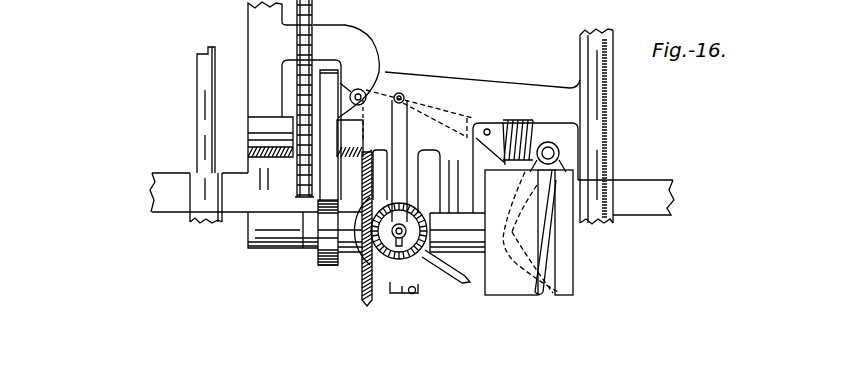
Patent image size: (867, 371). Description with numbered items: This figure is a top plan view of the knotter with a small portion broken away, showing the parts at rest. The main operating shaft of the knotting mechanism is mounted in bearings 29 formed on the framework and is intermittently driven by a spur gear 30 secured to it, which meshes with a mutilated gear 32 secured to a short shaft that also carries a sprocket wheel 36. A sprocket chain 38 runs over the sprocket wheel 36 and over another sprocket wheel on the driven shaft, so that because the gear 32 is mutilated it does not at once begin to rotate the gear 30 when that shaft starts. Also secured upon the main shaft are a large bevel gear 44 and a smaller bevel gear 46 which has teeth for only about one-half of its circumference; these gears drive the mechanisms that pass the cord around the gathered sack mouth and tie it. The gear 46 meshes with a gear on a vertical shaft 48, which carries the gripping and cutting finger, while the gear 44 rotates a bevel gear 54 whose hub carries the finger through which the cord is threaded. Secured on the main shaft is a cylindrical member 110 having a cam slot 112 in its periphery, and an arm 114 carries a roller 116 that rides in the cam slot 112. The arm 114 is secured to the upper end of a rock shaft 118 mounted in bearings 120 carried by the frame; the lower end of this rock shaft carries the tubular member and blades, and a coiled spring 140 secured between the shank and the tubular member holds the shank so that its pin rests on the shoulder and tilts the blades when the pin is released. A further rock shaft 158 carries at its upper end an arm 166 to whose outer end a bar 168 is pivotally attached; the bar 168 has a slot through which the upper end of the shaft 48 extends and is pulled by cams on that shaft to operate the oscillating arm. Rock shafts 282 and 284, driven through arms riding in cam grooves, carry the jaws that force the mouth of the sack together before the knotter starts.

The rock shaft 282 is at (205, 113).
The rock shaft 284 is at (600, 95).
The sprocket chain 38 is at (303, 70).
The sprocket wheel 36 is at (295, 175).
The mutilated gear 32 is at (372, 58).
The rock shaft 158 is at (366, 86).
The arm 166 is at (380, 101).
The bar 168 is at (402, 125).
The coiled spring 140 is at (523, 116).
The arm 114 is at (512, 165).
The rock shaft 118 is at (556, 153).
The bearings 120 is at (559, 146).
The roller 116 is at (503, 237).
The cam slot 112 is at (548, 259).
The cylindrical member 110 is at (565, 278).
The bearings 29 is at (282, 238).
The spur gear 30 is at (330, 268).
The large bevel gear 44 is at (360, 297).
The vertical shaft 48 is at (396, 248).
The bevel gear 54 is at (396, 255).
The smaller bevel gear 46 is at (415, 294).